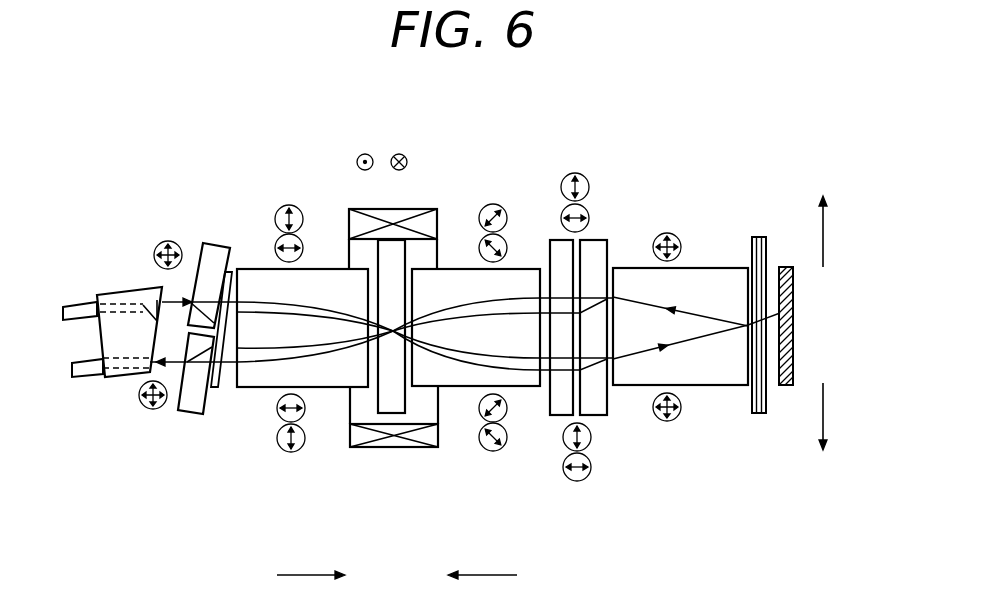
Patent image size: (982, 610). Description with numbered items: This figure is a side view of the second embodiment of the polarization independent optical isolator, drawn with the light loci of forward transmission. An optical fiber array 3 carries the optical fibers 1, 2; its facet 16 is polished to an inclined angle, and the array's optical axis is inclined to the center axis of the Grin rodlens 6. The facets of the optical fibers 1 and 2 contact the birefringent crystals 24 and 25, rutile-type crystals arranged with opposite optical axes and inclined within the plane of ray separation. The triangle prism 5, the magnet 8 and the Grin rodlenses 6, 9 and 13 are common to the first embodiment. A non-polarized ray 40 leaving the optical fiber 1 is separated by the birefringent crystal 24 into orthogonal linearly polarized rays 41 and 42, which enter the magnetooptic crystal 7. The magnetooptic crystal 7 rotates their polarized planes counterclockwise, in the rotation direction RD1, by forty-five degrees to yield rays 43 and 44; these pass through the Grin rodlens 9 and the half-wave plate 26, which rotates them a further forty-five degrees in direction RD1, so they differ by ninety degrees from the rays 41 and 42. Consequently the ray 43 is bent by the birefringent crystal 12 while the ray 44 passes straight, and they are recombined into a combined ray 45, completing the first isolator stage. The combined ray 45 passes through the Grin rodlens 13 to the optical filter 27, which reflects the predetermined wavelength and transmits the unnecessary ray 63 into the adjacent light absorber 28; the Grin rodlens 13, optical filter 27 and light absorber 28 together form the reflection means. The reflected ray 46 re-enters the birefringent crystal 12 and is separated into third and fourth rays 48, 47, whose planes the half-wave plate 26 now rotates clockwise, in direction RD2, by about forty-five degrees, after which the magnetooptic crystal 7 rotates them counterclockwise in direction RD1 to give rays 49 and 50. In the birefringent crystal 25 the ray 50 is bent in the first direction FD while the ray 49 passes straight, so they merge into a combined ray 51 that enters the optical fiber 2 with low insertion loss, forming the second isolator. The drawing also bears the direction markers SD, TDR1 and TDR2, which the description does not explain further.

The optical fiber 1 is at (74, 304).
The optical fiber 2 is at (84, 378).
The optical fiber array 3 is at (105, 294).
The triangle prism 5 is at (219, 390).
The Grin rodlens 6 is at (262, 269).
The magnetooptic crystal 7 is at (388, 414).
The magnet 8 is at (418, 449).
The Grin rodlens 9 is at (531, 268).
The birefringent crystal 12 is at (599, 240).
The Grin rodlens 13 is at (637, 268).
The facet 16 is at (144, 289).
The birefringent crystal 24 is at (222, 242).
The birefringent crystal 25 is at (188, 416).
The half-wave plate 26 is at (553, 240).
The optical filter 27 is at (760, 237).
The light absorber 28 is at (788, 267).
The non-polarized ray 40 is at (174, 301).
The linearly polarized first ray 41 is at (309, 307).
The linearly polarized second ray 42 is at (327, 312).
The linearly polarized ray 43 is at (522, 371).
The linearly polarized ray 44 is at (538, 362).
The combined ray 45 is at (703, 346).
The reflected ray 46 is at (698, 306).
The linearly polarized fourth ray 47 is at (477, 302).
The linearly polarized third ray 48 is at (453, 317).
The linearly polarized ray 49 is at (270, 352).
The linearly polarized ray 50 is at (253, 352).
The combined ray 51 is at (154, 410).
The unnecessary ray 63 is at (771, 325).
The counterclockwise rotation direction RD1 is at (399, 154).
The clockwise rotation direction RD2 is at (366, 154).
The slow direction SD is at (823, 242).
The first direction FD is at (823, 410).
The transmission direction 1 TDR1 is at (307, 572).
The transmission direction 2 TDR2 is at (483, 572).